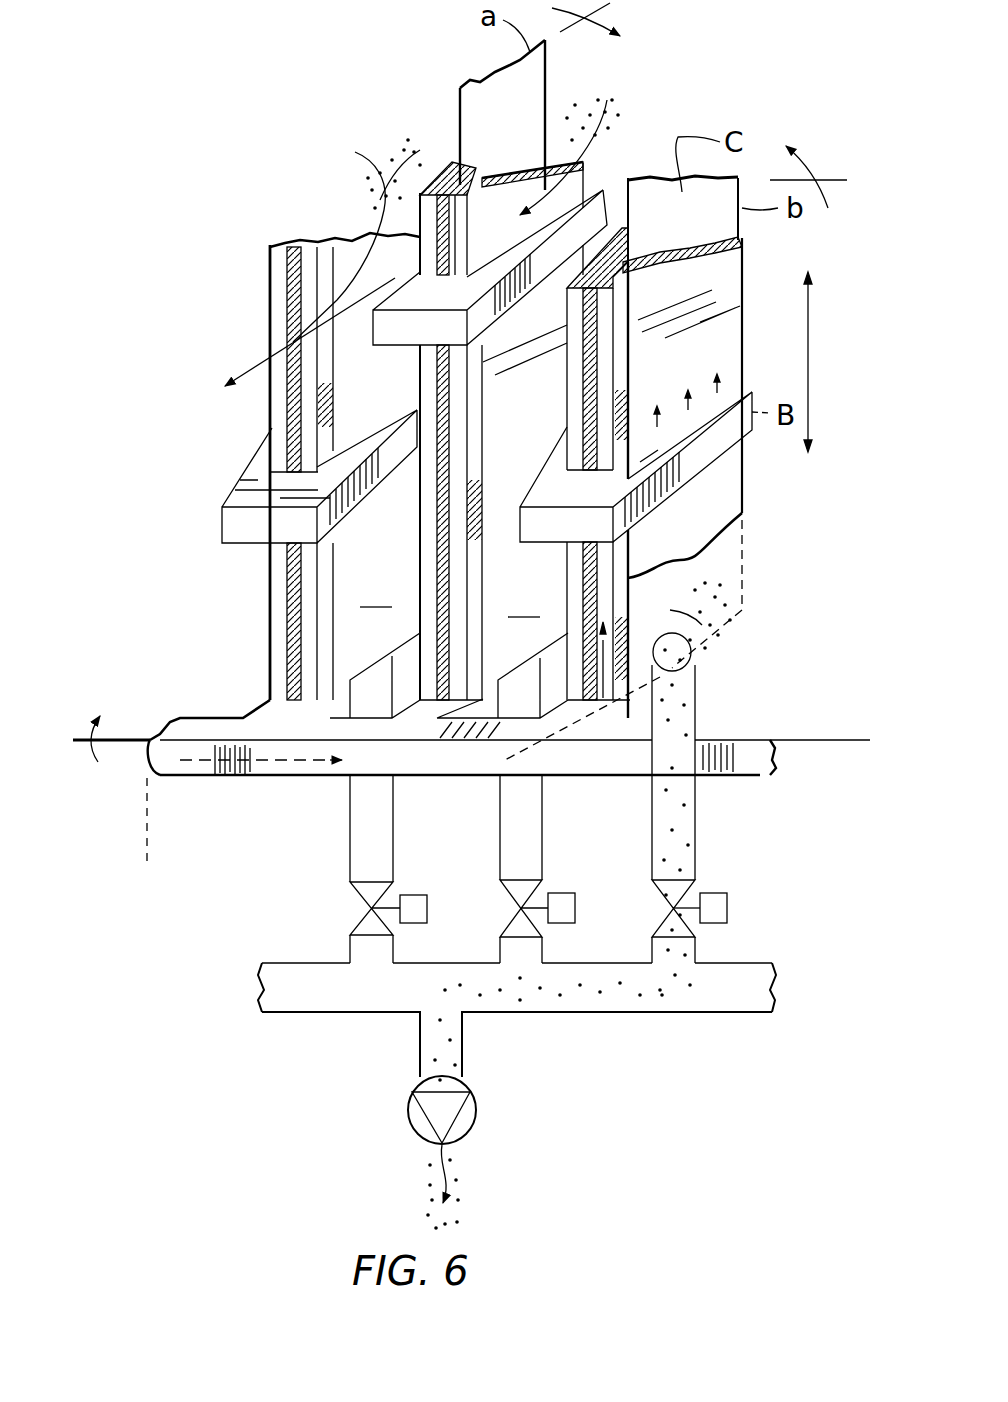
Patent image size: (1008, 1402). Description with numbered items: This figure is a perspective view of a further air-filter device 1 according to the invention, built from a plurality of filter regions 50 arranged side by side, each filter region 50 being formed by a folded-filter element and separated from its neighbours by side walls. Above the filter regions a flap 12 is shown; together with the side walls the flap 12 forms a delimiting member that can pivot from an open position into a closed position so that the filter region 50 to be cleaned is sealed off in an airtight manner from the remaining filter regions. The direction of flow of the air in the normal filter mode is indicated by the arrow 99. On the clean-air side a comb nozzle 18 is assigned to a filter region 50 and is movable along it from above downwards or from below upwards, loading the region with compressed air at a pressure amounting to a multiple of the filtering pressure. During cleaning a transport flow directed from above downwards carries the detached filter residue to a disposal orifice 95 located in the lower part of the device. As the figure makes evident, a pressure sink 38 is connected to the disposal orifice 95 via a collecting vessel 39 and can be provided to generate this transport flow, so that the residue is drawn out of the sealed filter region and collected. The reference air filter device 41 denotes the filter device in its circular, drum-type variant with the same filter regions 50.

The air-filter device 1 is at (245, 637).
The flap 12 is at (468, 84).
The comb nozzle 18 is at (205, 493).
The pressure sink 38 is at (408, 1110).
The collecting vessel 39 is at (700, 700).
The air filter device 41 is at (268, 226).
The filter region 50 is at (768, 582).
The disposal orifice 95 is at (700, 672).
The arrow indicating direction of air flow 99 is at (357, 228).